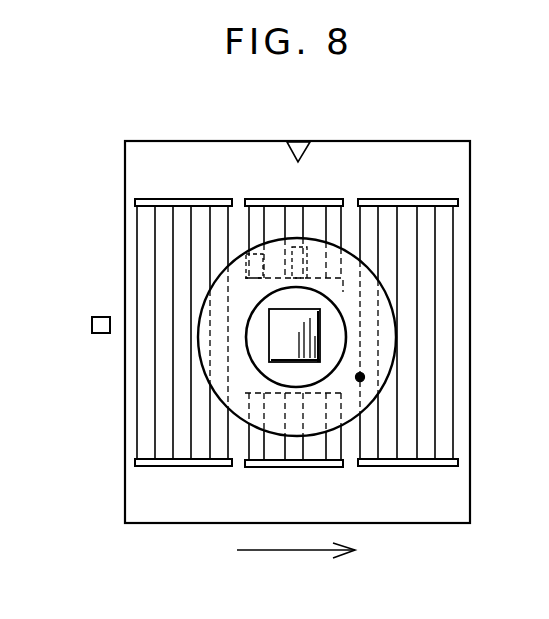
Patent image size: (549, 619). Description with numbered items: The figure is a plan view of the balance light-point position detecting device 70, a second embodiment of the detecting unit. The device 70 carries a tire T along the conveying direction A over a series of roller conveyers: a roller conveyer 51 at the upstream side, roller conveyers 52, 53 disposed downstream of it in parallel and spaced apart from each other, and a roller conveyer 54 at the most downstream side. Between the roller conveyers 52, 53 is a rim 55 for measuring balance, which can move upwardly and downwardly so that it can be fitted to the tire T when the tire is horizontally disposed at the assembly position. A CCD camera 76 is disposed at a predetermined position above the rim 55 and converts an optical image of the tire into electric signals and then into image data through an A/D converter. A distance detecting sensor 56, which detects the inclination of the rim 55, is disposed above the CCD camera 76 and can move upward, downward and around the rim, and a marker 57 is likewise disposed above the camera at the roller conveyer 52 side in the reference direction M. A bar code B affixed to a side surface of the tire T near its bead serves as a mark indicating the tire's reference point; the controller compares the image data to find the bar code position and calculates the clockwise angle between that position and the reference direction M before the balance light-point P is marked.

The balance light-point position detecting device 70 is at (106, 179).
The roller conveyer 51 is at (180, 199).
The roller conveyer 52 is at (325, 200).
The roller conveyer 53 is at (285, 467).
The roller conveyer 54 is at (395, 200).
The rim 55 is at (246, 337).
The distance detecting sensor 56 is at (243, 254).
The marker 57 is at (317, 248).
The CCD camera 76 is at (268, 345).
The bar code B is at (338, 292).
The tire T is at (390, 305).
The balance light-point P is at (360, 377).
The reference direction M is at (298, 142).
The conveying direction A is at (278, 552).